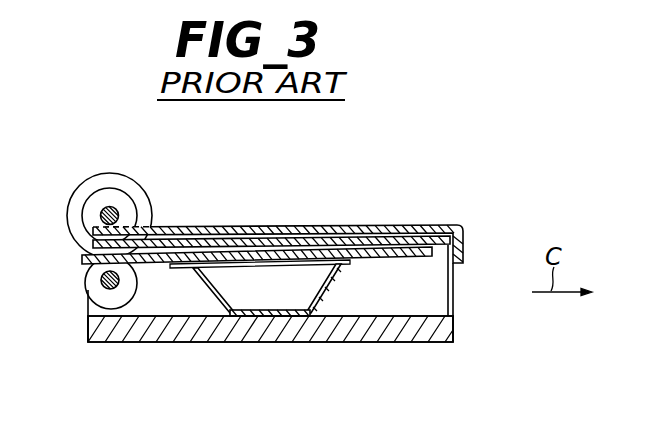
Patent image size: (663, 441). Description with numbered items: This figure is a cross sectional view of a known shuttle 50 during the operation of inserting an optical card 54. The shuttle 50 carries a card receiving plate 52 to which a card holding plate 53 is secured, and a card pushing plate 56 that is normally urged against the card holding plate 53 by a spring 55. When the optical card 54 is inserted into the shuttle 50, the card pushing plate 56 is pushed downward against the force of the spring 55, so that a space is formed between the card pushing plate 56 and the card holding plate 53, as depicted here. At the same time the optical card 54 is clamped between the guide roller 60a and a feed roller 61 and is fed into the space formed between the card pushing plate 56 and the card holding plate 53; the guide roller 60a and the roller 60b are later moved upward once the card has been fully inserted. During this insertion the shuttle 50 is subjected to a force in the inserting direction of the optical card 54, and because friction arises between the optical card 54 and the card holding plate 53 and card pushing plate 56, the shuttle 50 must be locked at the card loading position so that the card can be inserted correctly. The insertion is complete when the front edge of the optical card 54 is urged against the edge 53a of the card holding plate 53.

The shuttle 50 is at (434, 352).
The card receiving plate 52 is at (219, 343).
The card holding plate 53 is at (341, 236).
The edge of the card holding plate 53a is at (465, 236).
The optical card 54 is at (229, 226).
The spring 55 is at (331, 288).
The card pushing plate 56 is at (407, 259).
The guide roller 60a is at (127, 179).
The roller 60b is at (88, 190).
The feed roller 61 is at (85, 288).